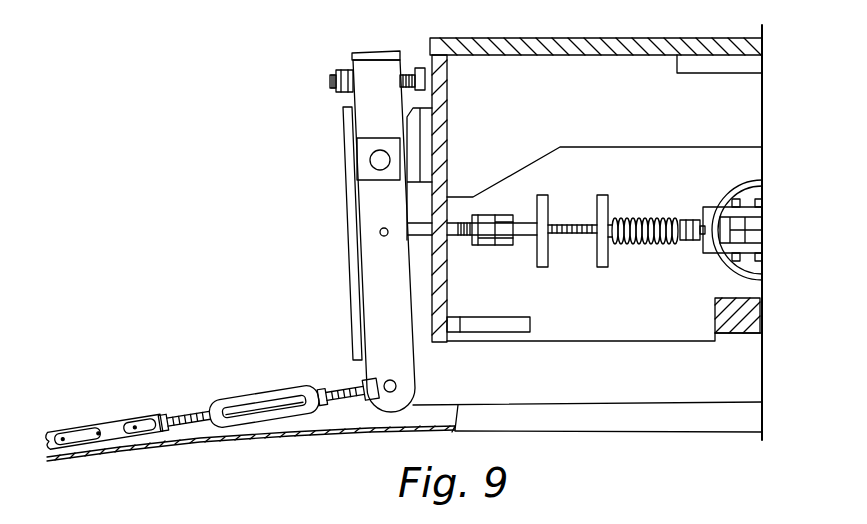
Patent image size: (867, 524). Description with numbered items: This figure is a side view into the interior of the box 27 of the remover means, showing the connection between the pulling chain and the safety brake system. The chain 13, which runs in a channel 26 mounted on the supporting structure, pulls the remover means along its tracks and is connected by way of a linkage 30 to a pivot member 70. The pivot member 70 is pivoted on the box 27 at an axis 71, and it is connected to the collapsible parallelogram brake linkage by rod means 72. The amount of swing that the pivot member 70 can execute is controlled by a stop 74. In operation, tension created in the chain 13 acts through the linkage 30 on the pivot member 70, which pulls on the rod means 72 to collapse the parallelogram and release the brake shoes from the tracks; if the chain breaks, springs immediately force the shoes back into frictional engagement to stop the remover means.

The chain 13 is at (113, 432).
The channel 26 is at (657, 425).
The box 27 is at (590, 38).
The linkage 30 is at (262, 402).
The pivot member 70 is at (368, 272).
The axis 71 is at (370, 160).
The rod means 72 is at (573, 225).
The stop 74 is at (420, 67).